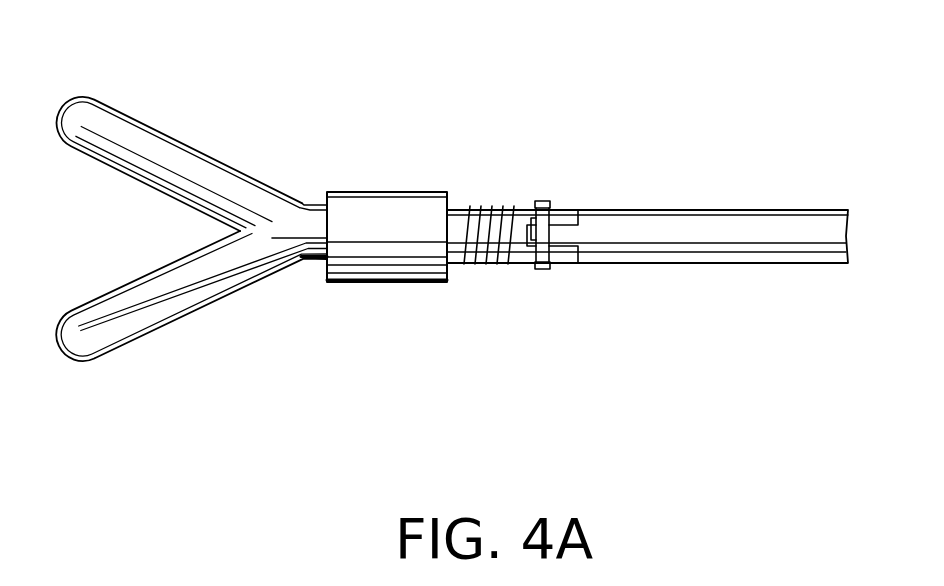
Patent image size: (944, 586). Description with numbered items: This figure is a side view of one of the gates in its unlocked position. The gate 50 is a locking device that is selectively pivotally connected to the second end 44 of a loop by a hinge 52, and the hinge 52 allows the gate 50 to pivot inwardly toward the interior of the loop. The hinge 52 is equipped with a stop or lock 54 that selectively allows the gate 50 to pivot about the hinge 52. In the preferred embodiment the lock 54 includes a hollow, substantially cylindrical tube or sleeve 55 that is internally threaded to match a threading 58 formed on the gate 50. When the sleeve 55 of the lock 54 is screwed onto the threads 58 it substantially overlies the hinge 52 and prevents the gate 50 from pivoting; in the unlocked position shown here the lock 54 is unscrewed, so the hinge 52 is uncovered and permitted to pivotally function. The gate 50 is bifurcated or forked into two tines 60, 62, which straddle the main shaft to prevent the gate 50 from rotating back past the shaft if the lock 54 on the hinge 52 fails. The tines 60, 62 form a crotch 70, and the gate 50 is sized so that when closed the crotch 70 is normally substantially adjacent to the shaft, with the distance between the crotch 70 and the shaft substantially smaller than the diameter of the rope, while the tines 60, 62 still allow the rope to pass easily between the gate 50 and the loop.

The second end 44 is at (700, 232).
The gate 50 is at (237, 153).
The hinge 52 is at (575, 196).
The lock 54 is at (412, 190).
The sleeve 55 is at (355, 203).
The threading 58 is at (481, 262).
The tine 60 is at (108, 120).
The tine 62 is at (110, 332).
The crotch 70 is at (295, 232).